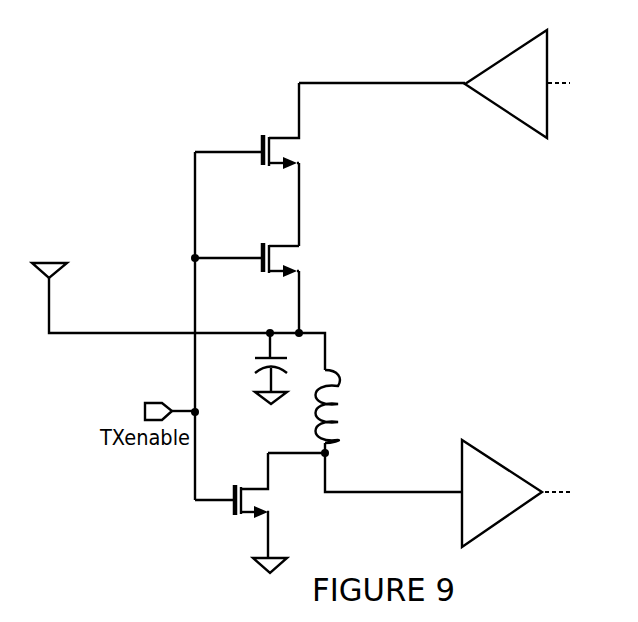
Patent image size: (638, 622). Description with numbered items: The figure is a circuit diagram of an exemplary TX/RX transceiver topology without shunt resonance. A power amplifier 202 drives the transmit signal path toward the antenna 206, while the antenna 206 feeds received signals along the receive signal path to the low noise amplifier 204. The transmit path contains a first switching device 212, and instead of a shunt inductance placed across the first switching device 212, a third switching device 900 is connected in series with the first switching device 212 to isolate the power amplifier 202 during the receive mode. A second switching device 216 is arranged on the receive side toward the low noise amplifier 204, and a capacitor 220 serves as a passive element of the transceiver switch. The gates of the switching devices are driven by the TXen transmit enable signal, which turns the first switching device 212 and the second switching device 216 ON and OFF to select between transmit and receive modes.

The power amplifier 202 is at (547, 62).
The low noise amplifier 204 is at (505, 463).
The antenna 206 is at (40, 262).
The first switching device 212 is at (246, 111).
The second switching device 216 is at (347, 399).
The capacitor 220 is at (250, 378).
The third switching device 900 is at (270, 279).